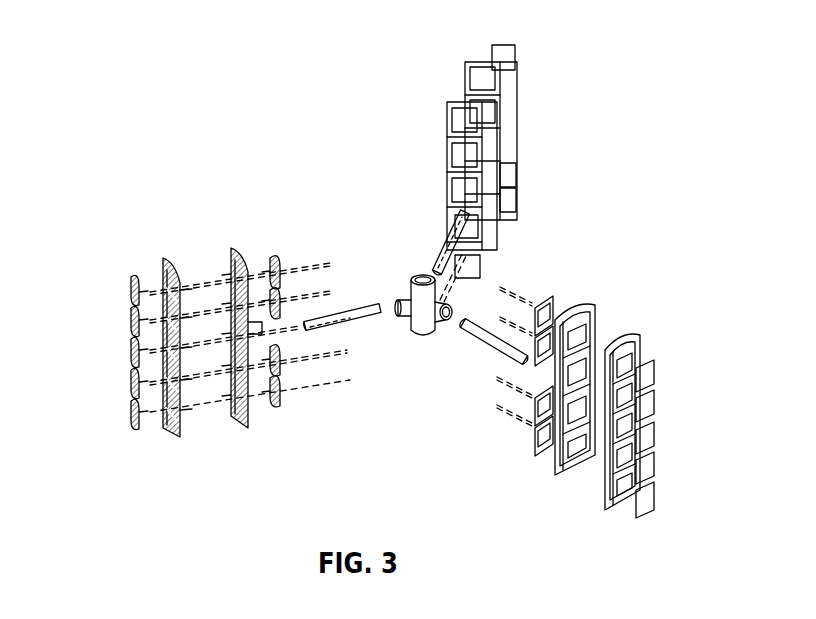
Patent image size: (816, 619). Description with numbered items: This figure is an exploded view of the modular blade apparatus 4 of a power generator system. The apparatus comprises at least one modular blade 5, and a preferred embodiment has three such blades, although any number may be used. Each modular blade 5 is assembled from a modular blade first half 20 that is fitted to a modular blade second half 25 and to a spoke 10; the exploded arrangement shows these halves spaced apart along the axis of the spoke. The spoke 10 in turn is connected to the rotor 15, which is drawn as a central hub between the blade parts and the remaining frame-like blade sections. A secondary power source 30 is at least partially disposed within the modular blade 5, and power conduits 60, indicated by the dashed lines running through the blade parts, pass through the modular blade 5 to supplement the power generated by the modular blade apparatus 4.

The modular blade apparatus 4 is at (112, 138).
The modular blade 5 is at (105, 440).
The spoke 10 is at (362, 307).
The rotor 15 is at (428, 336).
The modular blade first half 20 is at (243, 425).
The modular blade second half 25 is at (175, 437).
The secondary power source 30 is at (137, 290).
The power conduits 60 is at (318, 393).